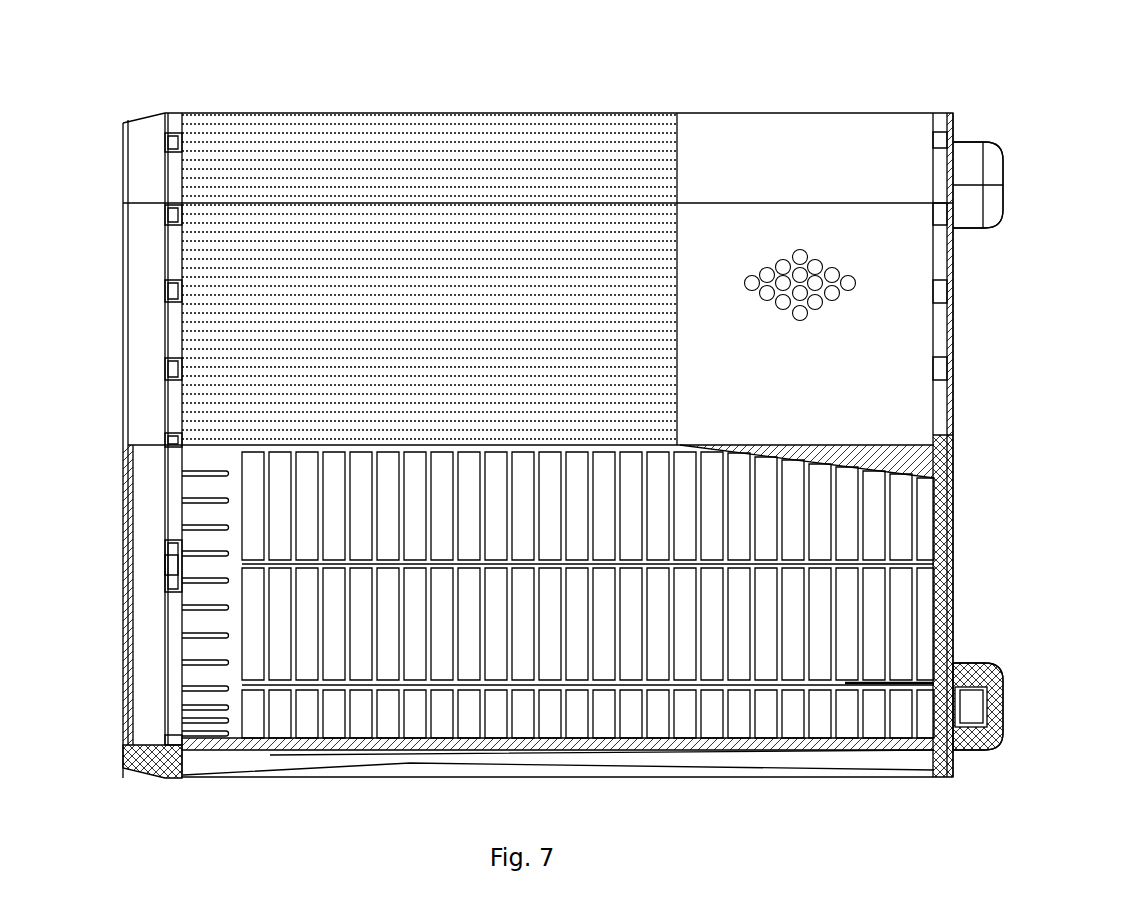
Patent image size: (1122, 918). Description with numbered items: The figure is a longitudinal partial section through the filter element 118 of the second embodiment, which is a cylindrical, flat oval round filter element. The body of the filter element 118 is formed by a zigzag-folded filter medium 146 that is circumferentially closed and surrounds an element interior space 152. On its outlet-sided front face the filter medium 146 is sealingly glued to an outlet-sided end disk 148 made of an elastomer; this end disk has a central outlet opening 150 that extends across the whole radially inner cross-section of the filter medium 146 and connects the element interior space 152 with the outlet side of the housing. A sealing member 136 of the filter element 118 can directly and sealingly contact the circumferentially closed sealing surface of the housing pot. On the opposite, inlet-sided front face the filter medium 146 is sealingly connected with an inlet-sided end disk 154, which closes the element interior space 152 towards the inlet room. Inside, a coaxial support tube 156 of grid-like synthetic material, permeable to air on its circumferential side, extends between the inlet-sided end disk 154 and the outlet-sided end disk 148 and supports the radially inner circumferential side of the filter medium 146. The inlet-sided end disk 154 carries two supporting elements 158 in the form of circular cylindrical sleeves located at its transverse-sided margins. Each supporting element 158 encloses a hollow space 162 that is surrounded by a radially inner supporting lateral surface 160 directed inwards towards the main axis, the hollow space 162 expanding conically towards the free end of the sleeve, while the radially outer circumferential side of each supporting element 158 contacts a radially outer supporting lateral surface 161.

The filter element 118 is at (318, 108).
The sealing member 136 is at (152, 135).
The filter medium 146 is at (565, 148).
The outlet-sided end disk 148 is at (178, 118).
The outlet opening 150 is at (168, 563).
The element interior space 152 is at (602, 526).
The inlet-sided end disk 154 is at (940, 403).
The support tube 156 is at (234, 648).
The supporting elements 158 is at (972, 155).
The radially inner supporting lateral surface 160 is at (975, 717).
The radially outer supporting lateral surface 161 is at (970, 230).
The hollow space 162 is at (975, 703).